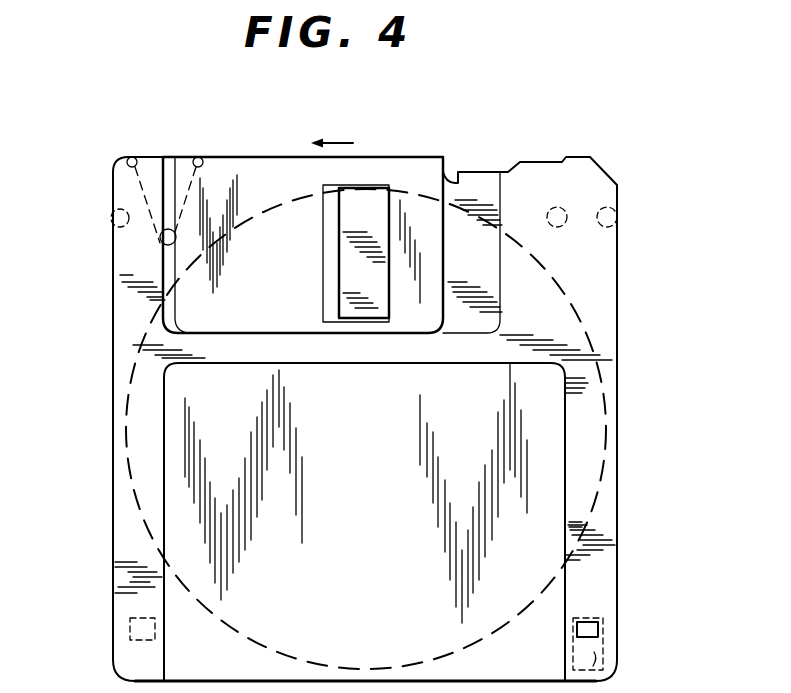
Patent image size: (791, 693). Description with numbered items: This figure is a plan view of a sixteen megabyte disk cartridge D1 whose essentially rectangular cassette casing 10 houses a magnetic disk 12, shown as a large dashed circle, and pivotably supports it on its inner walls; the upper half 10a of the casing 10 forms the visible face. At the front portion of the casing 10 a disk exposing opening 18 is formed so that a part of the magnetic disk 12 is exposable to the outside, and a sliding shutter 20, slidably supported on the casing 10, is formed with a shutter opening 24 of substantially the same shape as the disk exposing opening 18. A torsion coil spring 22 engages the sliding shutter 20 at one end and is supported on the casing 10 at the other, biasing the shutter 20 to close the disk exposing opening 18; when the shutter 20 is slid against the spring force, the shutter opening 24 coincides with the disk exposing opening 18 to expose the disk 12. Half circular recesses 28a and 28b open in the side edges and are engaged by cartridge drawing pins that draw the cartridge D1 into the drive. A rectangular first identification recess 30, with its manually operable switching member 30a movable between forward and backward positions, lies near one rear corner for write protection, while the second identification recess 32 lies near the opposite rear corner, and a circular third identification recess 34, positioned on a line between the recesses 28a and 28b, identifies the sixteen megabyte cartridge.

The cassette casing 10 is at (104, 374).
The upper half 10a is at (113, 543).
The magnetic disk 12 is at (134, 458).
The disk exposing opening 18 is at (343, 212).
The sliding shutter 20 is at (239, 170).
The torsion coil spring 22 is at (140, 195).
The shutter opening 24 is at (378, 213).
The half circular recess 28a is at (615, 210).
The half circular recess 28b is at (110, 234).
The first identification recess 30 is at (605, 655).
The manually operable switching member 30a is at (589, 618).
The second identification recess 32 is at (120, 630).
The third identification recess 34 is at (551, 206).
The disk cartridge D1 is at (140, 146).